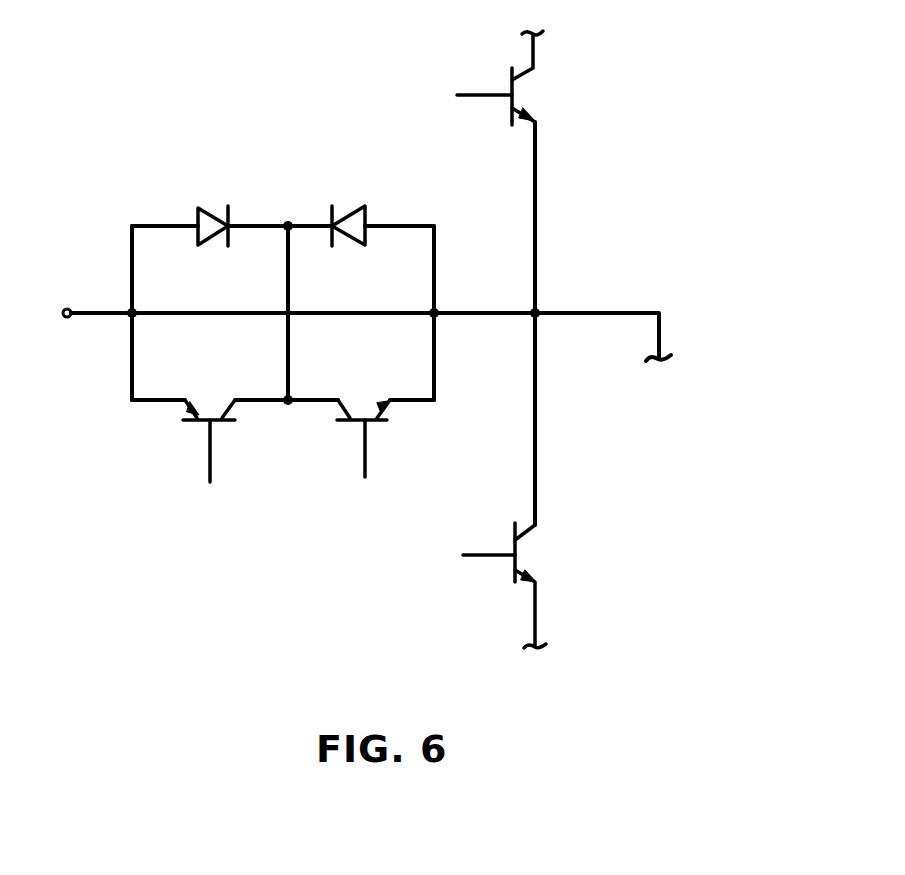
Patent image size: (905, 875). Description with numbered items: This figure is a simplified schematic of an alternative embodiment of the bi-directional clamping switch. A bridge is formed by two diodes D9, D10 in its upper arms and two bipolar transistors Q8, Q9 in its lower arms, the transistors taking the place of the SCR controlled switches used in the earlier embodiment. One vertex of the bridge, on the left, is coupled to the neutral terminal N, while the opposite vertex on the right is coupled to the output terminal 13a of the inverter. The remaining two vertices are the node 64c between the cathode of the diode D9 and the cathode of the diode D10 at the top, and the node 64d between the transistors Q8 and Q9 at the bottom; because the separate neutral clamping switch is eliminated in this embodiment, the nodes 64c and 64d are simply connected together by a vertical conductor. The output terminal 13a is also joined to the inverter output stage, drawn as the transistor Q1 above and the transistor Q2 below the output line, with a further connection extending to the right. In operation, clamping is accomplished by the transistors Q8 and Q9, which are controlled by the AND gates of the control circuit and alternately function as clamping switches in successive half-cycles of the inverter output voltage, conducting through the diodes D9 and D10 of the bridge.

The neutral terminal N is at (53, 316).
The diode D9 is at (207, 208).
The diode D10 is at (366, 216).
The third vertex 64c is at (288, 221).
The fourth vertex 64d is at (288, 405).
The bipolar transistor Q8 is at (197, 411).
The bipolar transistor Q9 is at (347, 411).
The transistor Q1 is at (526, 76).
The transistor Q2 is at (527, 533).
The output terminal 13a is at (536, 310).